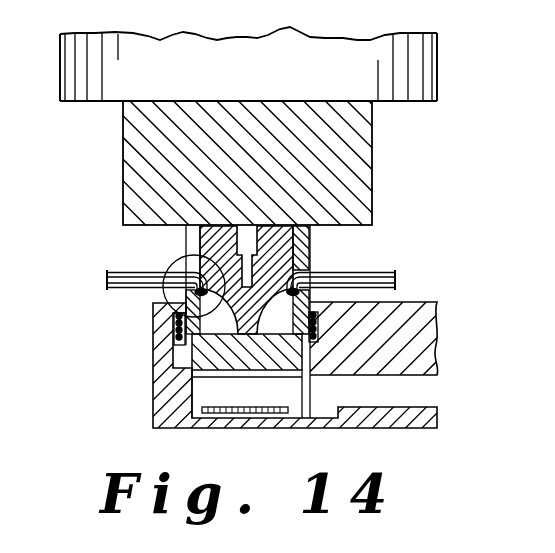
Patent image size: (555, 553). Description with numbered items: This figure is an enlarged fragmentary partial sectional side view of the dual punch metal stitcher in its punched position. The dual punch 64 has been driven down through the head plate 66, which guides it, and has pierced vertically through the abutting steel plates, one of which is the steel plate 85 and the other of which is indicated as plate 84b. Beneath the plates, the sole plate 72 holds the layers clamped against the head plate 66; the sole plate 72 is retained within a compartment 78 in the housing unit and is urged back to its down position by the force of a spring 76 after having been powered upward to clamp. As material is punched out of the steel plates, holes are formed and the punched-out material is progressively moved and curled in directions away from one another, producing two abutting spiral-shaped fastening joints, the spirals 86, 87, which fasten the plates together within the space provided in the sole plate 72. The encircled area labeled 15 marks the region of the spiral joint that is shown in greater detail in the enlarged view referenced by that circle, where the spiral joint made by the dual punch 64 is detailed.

The detail circle for FIG. 15 is at (169, 266).
The dual punch 64 is at (310, 250).
The head plate 66 is at (310, 238).
The sole plate 72 is at (215, 350).
The spring 76 is at (318, 320).
The compartment 78 is at (215, 393).
The tube 84b is at (127, 273).
The abutting steel plate 85 is at (130, 287).
The spiral 86 is at (168, 292).
The spiral 87 is at (308, 295).